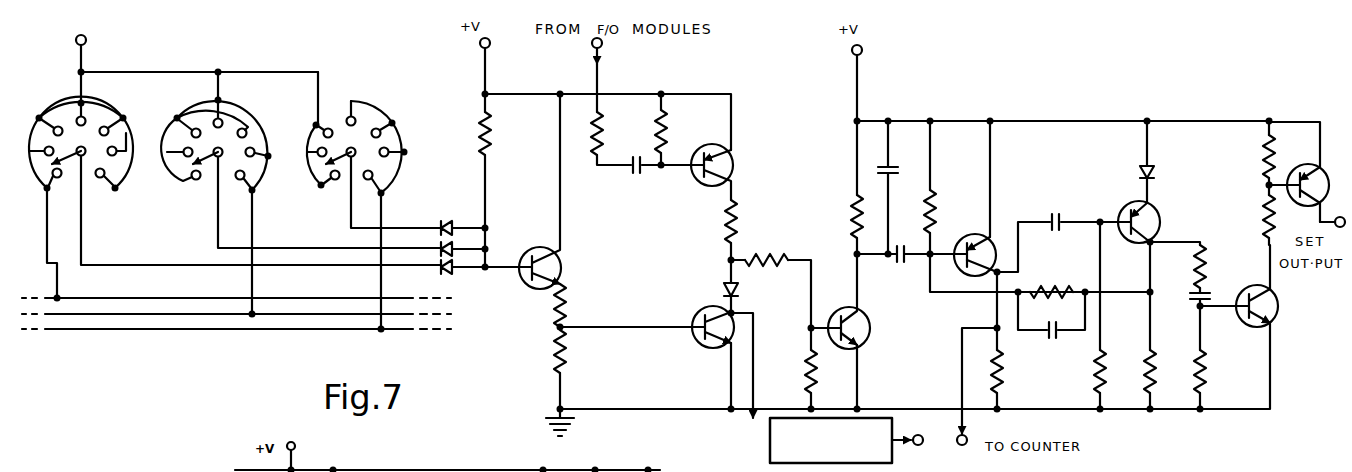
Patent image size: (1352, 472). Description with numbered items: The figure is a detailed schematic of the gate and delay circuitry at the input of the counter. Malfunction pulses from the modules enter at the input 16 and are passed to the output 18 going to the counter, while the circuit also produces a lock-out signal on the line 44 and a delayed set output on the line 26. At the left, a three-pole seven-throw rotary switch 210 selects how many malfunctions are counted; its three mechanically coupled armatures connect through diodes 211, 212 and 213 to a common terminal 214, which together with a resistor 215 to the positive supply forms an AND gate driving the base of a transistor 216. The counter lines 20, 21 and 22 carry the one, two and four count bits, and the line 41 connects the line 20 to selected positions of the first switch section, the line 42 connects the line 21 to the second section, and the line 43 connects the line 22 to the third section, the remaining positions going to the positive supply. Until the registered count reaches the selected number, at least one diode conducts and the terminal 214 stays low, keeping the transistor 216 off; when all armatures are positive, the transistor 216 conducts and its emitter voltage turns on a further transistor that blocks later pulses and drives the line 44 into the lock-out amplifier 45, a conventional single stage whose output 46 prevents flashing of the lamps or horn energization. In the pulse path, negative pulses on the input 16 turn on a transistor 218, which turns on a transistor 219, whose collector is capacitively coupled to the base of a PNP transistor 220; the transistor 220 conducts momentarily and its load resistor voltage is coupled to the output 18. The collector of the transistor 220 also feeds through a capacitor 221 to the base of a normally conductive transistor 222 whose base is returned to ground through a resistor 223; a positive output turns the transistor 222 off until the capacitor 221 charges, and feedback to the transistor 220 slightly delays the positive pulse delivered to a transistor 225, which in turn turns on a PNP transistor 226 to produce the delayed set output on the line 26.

The three-pole seven-throw rotary switch 210 is at (281, 94).
The line 41 is at (58, 283).
The line 42 is at (251, 289).
The line 43 is at (380, 290).
The line 20 is at (284, 290).
The line 21 is at (326, 292).
The line 22 is at (338, 329).
The diode 211 is at (440, 268).
The diode 212 is at (440, 250).
The diode 213 is at (440, 226).
The common terminal 214 is at (493, 227).
The resistor 215 is at (494, 145).
The transistor 216 is at (545, 248).
The transistor 218 is at (734, 165).
The transistor 219 is at (870, 330).
The PNP transistor 220 is at (983, 238).
The capacitor 221 is at (1046, 217).
The transistor 222 is at (1160, 221).
The resistor 223 is at (1097, 376).
The transistor 225 is at (1275, 318).
The PNP transistor 226 is at (1308, 168).
The input 16 is at (593, 44).
The output 18 is at (968, 438).
The line 26 is at (1344, 217).
The line 44 is at (751, 427).
The lock-out amplifier 45 is at (770, 456).
The output 46 is at (924, 447).